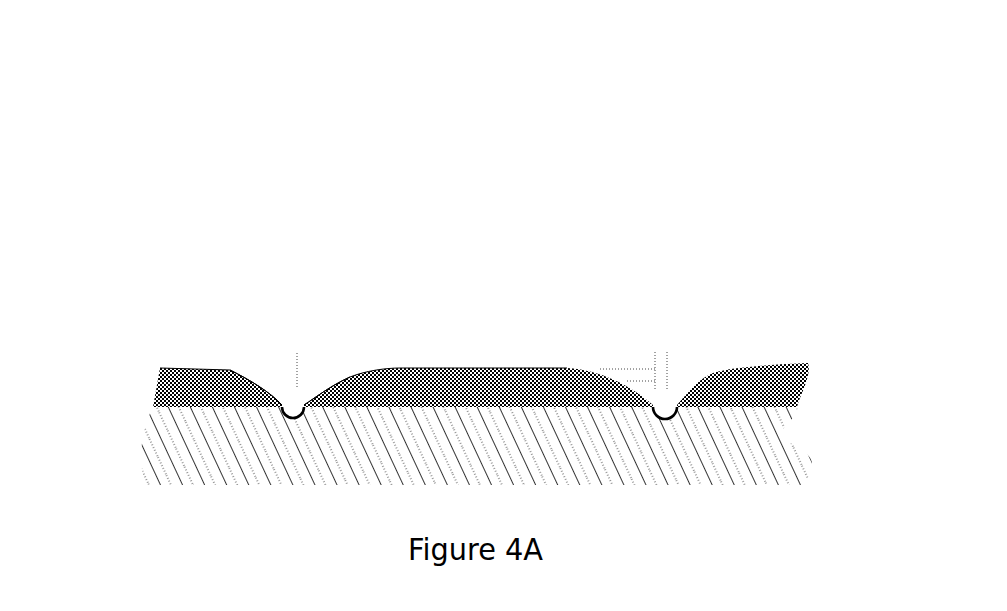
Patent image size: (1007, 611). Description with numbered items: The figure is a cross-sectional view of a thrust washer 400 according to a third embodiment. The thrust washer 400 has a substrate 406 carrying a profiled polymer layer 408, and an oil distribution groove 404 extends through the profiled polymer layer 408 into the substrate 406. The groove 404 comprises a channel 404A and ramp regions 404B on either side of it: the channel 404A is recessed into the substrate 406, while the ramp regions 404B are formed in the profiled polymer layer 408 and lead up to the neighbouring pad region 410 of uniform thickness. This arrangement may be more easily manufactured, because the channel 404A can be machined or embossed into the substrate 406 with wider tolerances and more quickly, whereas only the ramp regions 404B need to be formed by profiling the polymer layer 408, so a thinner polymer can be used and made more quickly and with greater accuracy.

The thrust washer 400 is at (653, 122).
The oil distribution groove 404 is at (378, 180).
The channel 404A is at (292, 387).
The ramp region 404B is at (218, 357).
The substrate 406 is at (200, 437).
The profiled polymer layer 408 is at (205, 388).
The pad region 410 is at (487, 340).